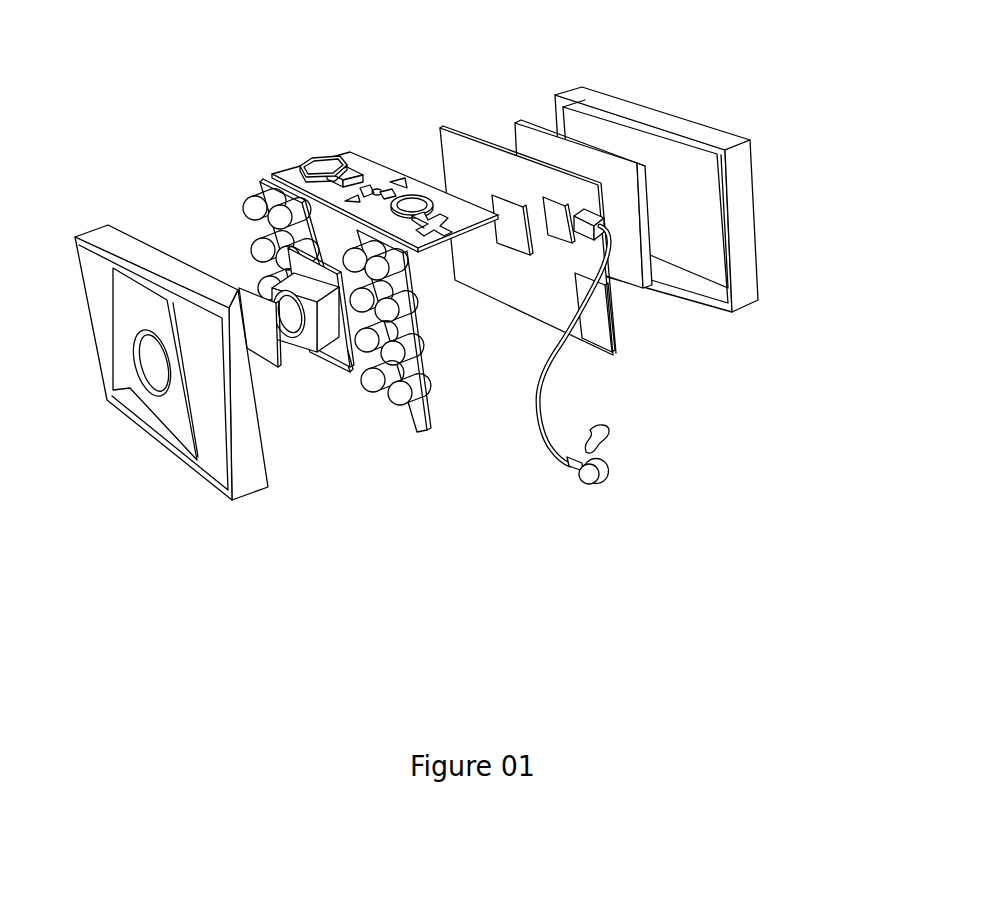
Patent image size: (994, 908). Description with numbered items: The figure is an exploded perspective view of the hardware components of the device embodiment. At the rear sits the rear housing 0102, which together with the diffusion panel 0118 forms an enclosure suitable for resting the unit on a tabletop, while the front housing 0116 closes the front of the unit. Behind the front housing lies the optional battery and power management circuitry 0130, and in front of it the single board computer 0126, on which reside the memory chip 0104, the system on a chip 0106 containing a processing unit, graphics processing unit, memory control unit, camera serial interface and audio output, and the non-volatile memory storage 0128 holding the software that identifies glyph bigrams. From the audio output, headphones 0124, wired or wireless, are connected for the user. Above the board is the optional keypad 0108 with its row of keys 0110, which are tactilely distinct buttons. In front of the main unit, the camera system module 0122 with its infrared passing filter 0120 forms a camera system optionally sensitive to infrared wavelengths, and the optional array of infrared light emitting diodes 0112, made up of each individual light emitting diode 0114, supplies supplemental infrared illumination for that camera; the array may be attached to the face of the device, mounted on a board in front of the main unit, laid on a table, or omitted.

The rear housing 0102 is at (698, 191).
The memory chip 0104 is at (677, 130).
The system on a chip/processing unit 0106 is at (455, 140).
The keypad 0108 is at (369, 154).
The row of keys 0110 is at (262, 139).
The array of infrared light emitting diodes 0112 is at (236, 252).
The individual light emitting diode 0114 is at (223, 241).
The front housing 0116 is at (140, 405).
The diffusion panel 0118 is at (171, 426).
The infrared passing filter 0120 is at (336, 427).
The camera system module 0122 is at (372, 386).
The headphones 0124 is at (646, 387).
The single board computer 0126 is at (620, 309).
The non-volatile memory storage 0128 is at (696, 346).
The battery and power management circuitry 0130 is at (675, 240).